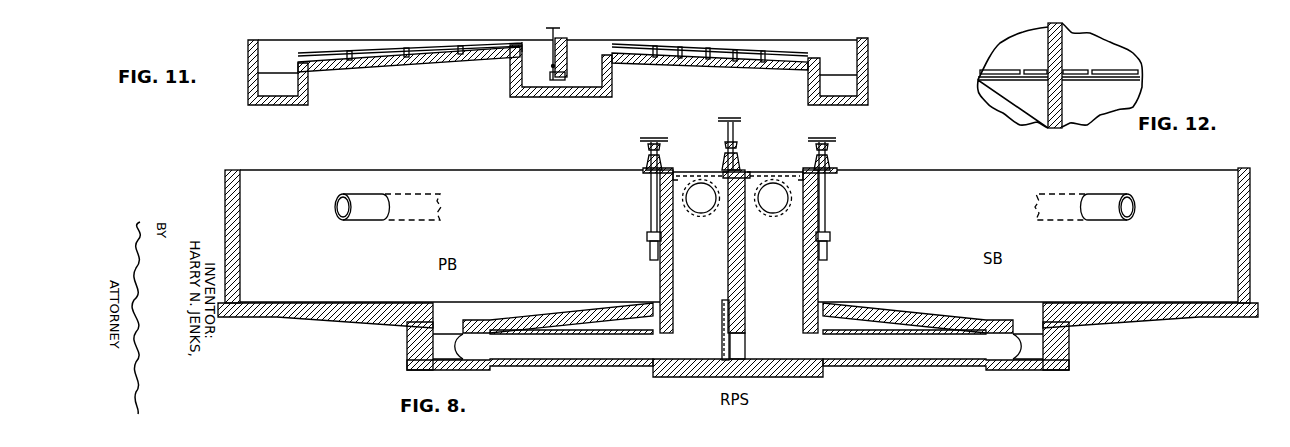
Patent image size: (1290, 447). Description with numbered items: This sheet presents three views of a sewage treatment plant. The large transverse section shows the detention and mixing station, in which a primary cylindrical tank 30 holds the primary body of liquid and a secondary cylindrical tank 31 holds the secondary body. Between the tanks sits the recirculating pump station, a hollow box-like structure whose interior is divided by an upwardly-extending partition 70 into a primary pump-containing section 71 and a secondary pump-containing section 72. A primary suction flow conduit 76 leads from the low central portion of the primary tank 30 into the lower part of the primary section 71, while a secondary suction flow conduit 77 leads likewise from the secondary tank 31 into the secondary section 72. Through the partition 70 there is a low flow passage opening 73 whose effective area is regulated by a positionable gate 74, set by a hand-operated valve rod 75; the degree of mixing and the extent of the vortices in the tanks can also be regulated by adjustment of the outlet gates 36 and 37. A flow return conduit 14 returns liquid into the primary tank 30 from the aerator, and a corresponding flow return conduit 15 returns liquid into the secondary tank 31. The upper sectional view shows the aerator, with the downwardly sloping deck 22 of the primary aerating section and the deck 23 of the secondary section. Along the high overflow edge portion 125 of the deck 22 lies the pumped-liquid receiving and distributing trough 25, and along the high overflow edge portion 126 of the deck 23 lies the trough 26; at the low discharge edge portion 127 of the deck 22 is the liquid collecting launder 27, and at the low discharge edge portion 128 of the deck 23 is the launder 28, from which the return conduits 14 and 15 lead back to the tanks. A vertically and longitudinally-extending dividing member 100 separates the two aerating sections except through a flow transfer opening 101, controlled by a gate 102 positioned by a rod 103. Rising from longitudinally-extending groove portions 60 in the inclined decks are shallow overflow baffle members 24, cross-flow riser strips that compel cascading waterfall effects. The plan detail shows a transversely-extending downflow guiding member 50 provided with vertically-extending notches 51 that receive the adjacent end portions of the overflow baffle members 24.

In FIG. 8, the flow return conduit 14 is at (363, 196).
In FIG. 8, the flow return conduit 15 is at (1112, 194).
In FIG. 11, the deck 22 is at (422, 67).
In FIG. 11, the deck 23 is at (724, 68).
In FIG. 11, the overflow baffle member 24 is at (351, 52).
In FIG. 12, the overflow baffle member 24 is at (1004, 73).
In FIG. 11, the liquid receiving and distributing trough 25 is at (561, 71).
In FIG. 11, the liquid receiving and distributing trough 26 is at (591, 71).
In FIG. 11, the liquid collecting launder 27 is at (281, 80).
In FIG. 11, the liquid collecting launder 28 is at (838, 76).
In FIG. 8, the primary cylindrical tank 30 is at (242, 256).
In FIG. 8, the secondary cylindrical tank 31 is at (1238, 236).
In FIG. 8, the outlet gate 36 is at (650, 246).
In FIG. 8, the outlet gate 37 is at (826, 248).
In FIG. 12, the downflow guiding member 50 is at (1060, 33).
In FIG. 12, the notch 51 is at (1069, 53).
In FIG. 11, the groove portion 60 is at (350, 61).
In FIG. 12, the groove portion 60 is at (1043, 81).
In FIG. 8, the partition 70 is at (748, 272).
In FIG. 8, the primary pump-containing section 71 is at (690, 264).
In FIG. 8, the secondary pump-containing section 72 is at (790, 269).
In FIG. 8, the flow passage opening 73 is at (745, 342).
In FIG. 8, the gate 74 is at (724, 330).
In FIG. 8, the valve rod 75 is at (738, 125).
In FIG. 8, the primary suction flow conduit 76 is at (559, 348).
In FIG. 8, the secondary suction flow conduit 77 is at (893, 348).
In FIG. 11, the dividing member 100 is at (563, 40).
In FIG. 11, the flow transfer opening 101 is at (575, 80).
In FIG. 11, the gate 102 is at (555, 80).
In FIG. 11, the rod 103 is at (552, 37).
In FIG. 11, the high overflow edge portion 125 is at (521, 43).
In FIG. 11, the high overflow edge portion 126 is at (592, 40).
In FIG. 11, the low discharge edge portion 127 is at (298, 63).
In FIG. 11, the low discharge edge portion 128 is at (821, 58).